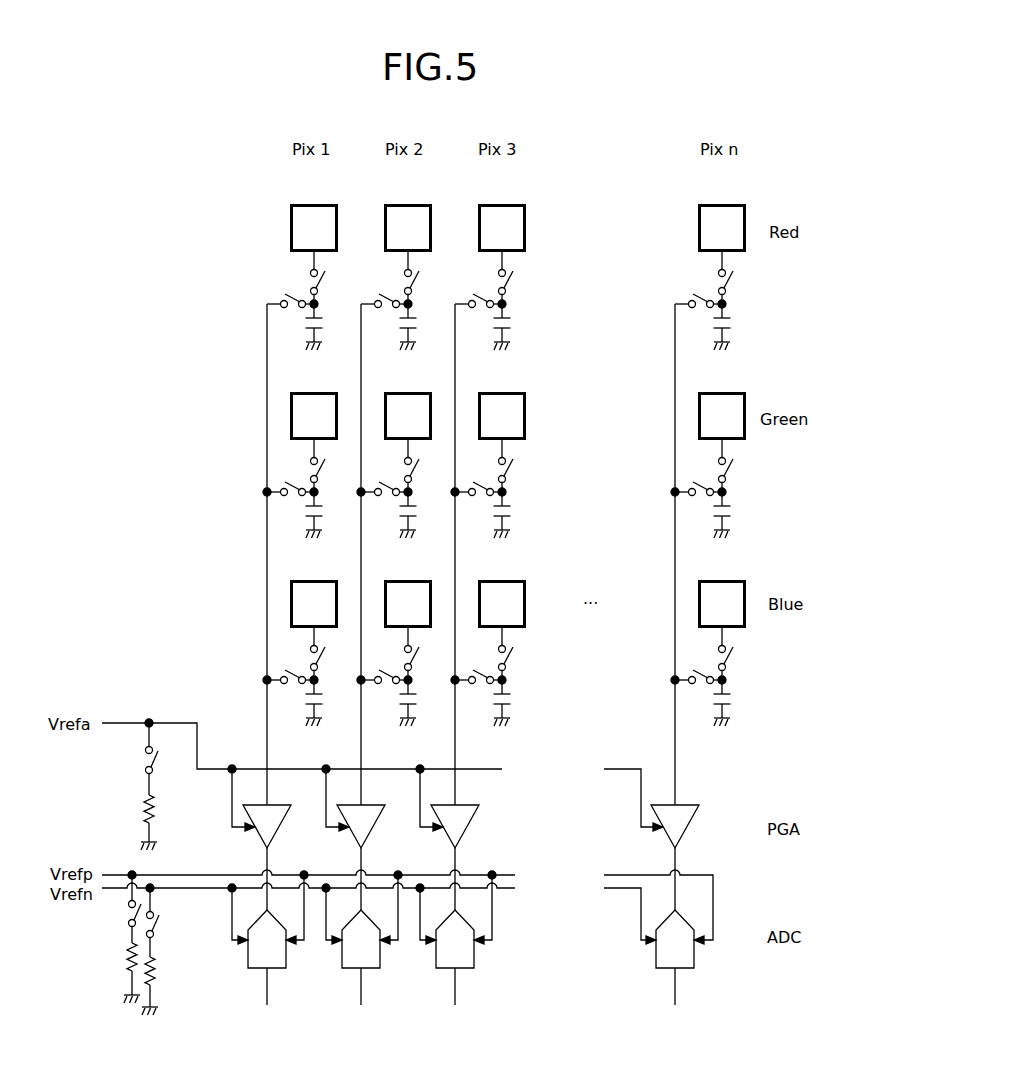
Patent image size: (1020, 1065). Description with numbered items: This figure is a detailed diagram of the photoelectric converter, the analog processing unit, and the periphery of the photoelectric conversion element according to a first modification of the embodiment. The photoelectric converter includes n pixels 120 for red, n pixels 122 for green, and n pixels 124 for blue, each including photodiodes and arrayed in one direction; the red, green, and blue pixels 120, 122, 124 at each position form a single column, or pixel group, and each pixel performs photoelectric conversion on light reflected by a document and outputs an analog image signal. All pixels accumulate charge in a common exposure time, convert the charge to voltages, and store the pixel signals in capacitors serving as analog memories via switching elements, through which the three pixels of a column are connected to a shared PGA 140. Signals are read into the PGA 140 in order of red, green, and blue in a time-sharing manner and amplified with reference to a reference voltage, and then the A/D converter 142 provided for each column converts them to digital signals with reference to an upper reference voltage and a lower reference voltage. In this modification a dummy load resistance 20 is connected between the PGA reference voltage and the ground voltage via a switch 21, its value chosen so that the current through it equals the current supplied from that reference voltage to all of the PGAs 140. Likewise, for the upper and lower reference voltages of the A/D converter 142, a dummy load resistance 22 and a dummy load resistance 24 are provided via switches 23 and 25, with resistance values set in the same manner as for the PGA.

The pixel 120 is at (240, 224).
The pixel 122 is at (240, 416).
The pixel 124 is at (240, 602).
The PGA 140 is at (280, 834).
The A/D converter 142 is at (288, 962).
The dummy load resistance 20 is at (155, 807).
The switch 21 is at (153, 764).
The dummy load resistance 22 is at (127, 962).
The switch 23 is at (127, 915).
The dummy load resistance 24 is at (156, 972).
The switch 25 is at (156, 930).